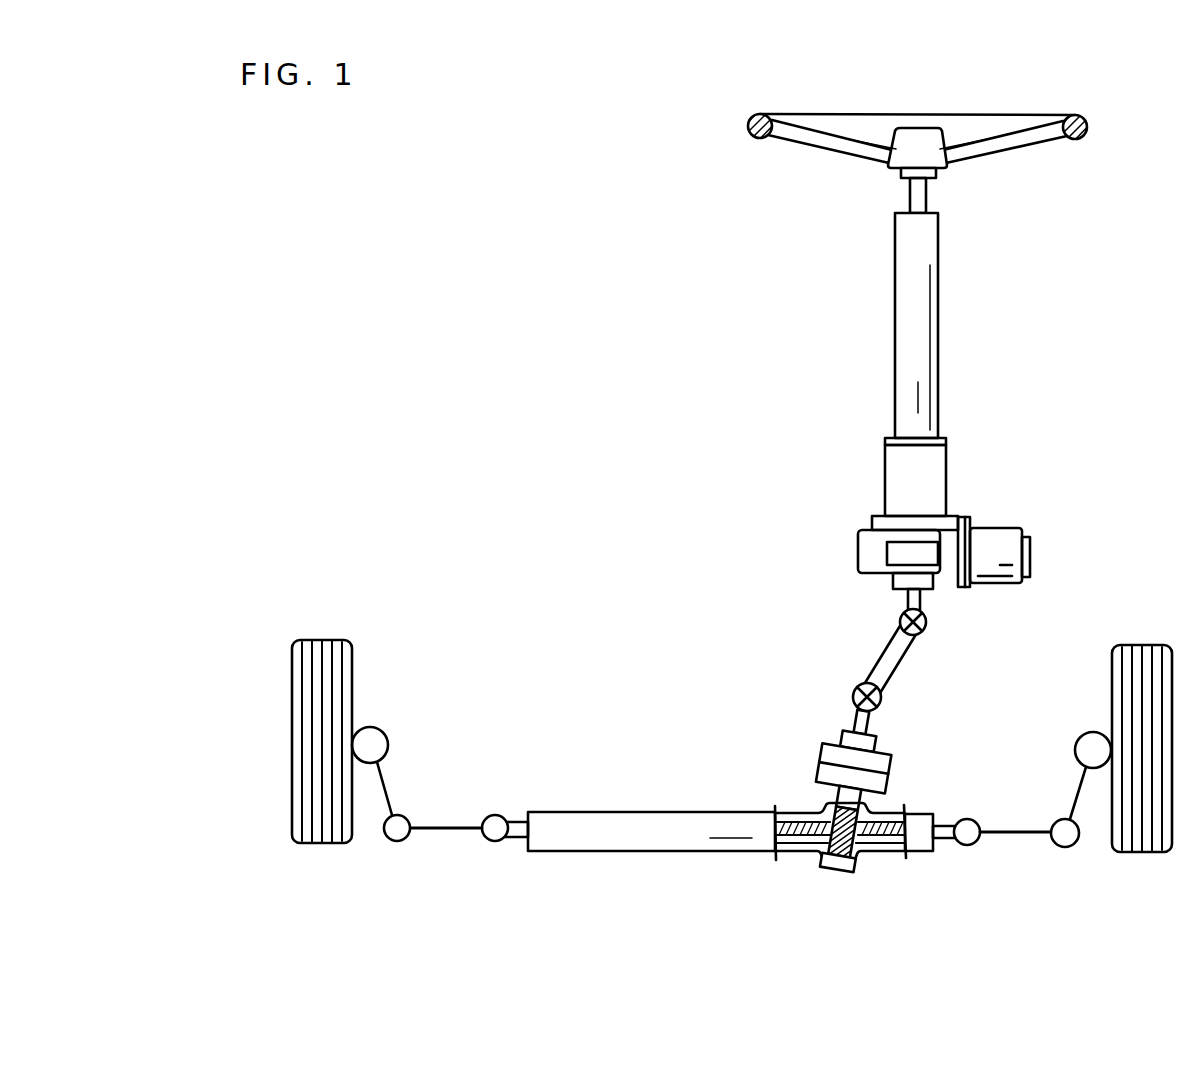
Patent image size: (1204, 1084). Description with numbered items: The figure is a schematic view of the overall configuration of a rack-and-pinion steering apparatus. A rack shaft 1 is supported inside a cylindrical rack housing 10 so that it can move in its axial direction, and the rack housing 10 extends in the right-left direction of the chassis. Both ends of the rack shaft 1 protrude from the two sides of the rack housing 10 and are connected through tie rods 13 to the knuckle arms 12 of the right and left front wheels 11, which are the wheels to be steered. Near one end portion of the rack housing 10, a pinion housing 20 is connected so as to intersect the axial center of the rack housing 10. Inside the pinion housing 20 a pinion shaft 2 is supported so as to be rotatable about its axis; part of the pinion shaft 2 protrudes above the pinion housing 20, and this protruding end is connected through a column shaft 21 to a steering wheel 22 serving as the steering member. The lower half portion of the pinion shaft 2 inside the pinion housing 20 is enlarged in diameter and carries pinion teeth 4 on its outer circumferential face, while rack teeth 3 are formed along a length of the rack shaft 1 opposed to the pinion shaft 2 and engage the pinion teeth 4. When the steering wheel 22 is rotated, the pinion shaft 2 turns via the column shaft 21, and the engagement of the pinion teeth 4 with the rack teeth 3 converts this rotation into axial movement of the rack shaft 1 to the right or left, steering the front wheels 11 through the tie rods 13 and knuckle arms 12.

The rack shaft 1 is at (517, 820).
The pinion shaft 2 is at (872, 720).
The rack teeth 3 is at (800, 852).
The pinion teeth 4 is at (856, 858).
The rack housing 10 is at (690, 815).
The front wheels 11 is at (315, 845).
The knuckle arms 12 is at (383, 790).
The tie rods 13 is at (446, 832).
The pinion housing 20 is at (827, 797).
The column shaft 21 is at (925, 195).
The steering wheel 22 is at (750, 124).